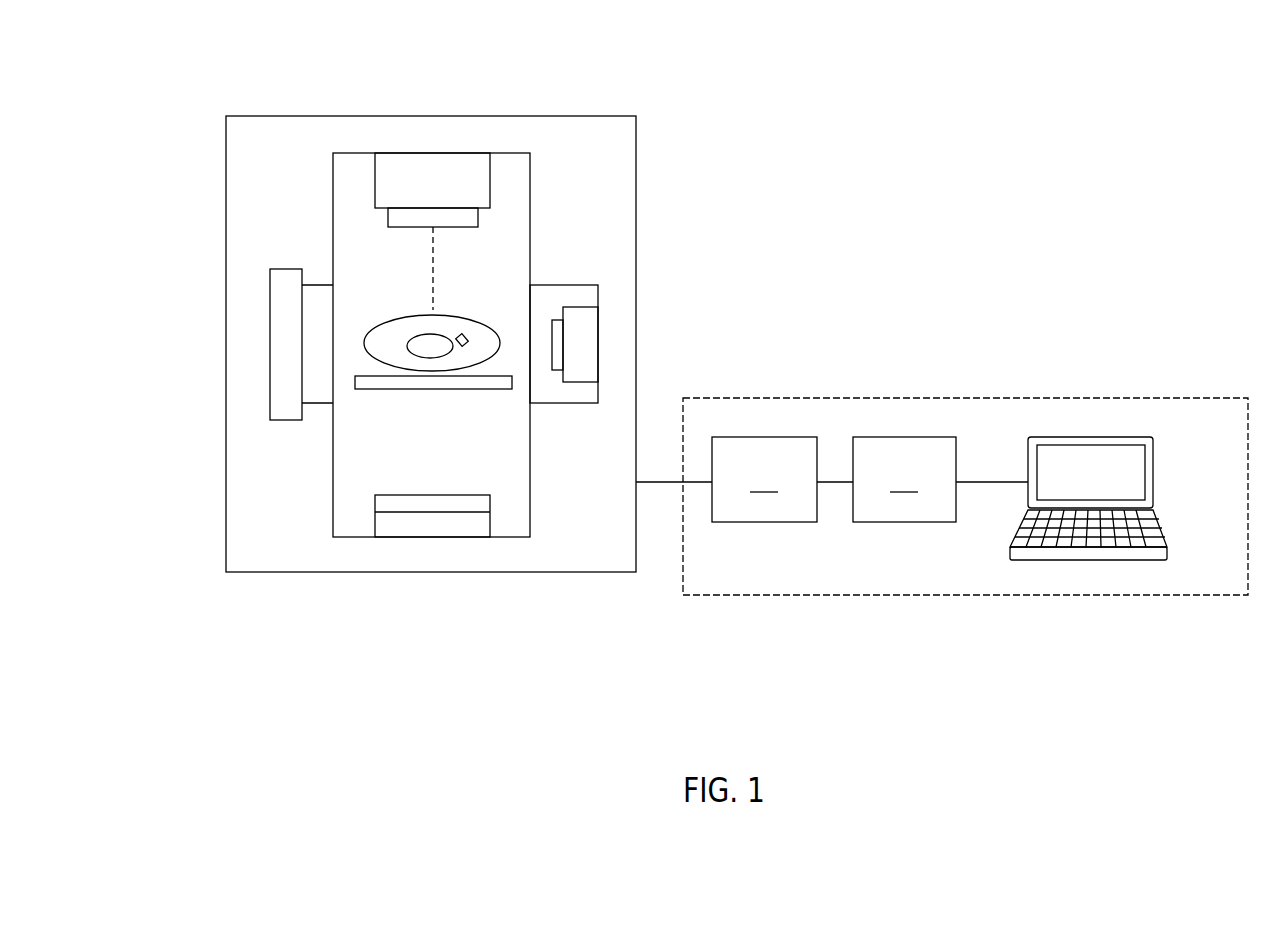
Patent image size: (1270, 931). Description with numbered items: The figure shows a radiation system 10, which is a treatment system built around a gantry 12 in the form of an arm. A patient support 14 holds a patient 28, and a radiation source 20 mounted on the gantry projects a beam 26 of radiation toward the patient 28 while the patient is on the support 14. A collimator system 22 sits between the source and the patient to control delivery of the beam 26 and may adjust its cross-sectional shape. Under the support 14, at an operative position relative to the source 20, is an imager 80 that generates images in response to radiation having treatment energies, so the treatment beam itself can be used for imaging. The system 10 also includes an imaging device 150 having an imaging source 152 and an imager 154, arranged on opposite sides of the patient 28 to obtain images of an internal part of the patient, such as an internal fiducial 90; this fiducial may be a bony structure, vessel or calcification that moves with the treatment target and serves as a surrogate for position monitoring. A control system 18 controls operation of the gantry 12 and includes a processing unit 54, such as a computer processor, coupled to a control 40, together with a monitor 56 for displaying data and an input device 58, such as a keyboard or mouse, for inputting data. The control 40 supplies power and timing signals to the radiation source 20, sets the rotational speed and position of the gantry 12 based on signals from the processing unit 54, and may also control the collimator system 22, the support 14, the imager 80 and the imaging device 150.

The radiation system 10 is at (790, 118).
The gantry 12 is at (532, 243).
The patient support 14 is at (392, 383).
The control system 18 is at (1020, 398).
The radiation source 20 is at (492, 168).
The collimator system 22 is at (480, 213).
The beam 26 is at (434, 260).
The patient 28 is at (388, 338).
The control 40 is at (764, 479).
The processing unit 54 is at (904, 479).
The monitor 56 is at (1160, 462).
The input device 58 is at (1170, 548).
The imager 80 is at (465, 495).
The internal fiducial 90 is at (463, 345).
The imaging device 150 is at (612, 313).
The imaging source 152 is at (556, 370).
The imager 154 is at (265, 360).